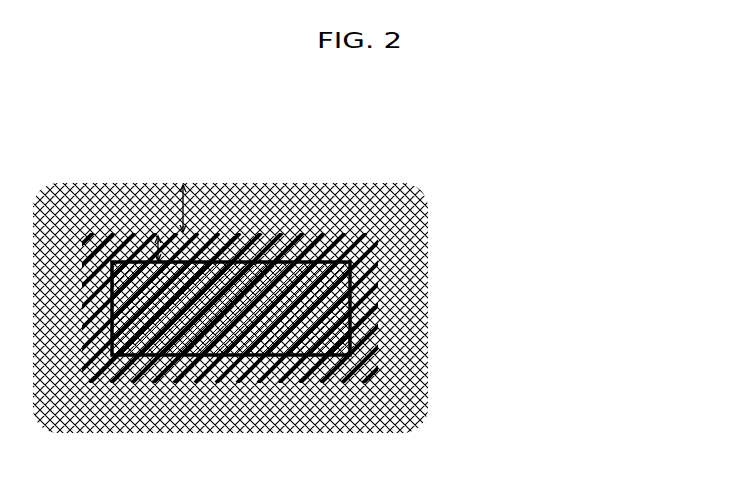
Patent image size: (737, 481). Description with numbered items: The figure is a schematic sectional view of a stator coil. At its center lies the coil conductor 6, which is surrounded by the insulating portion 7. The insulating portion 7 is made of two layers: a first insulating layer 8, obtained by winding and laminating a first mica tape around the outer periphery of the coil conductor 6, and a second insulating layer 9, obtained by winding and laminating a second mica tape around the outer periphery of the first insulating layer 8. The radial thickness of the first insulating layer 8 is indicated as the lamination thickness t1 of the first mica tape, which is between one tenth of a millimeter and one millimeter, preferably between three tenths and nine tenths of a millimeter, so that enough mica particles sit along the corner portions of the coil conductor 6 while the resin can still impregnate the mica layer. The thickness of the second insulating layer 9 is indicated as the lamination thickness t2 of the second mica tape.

The coil conductor 6 is at (323, 338).
The insulating portion 7 is at (332, 289).
The first insulating layer 8 is at (365, 265).
The second insulating layer 9 is at (373, 195).
The lamination thickness of the first mica tape t1 is at (152, 242).
The lamination thickness of the second mica tape t2 is at (187, 212).